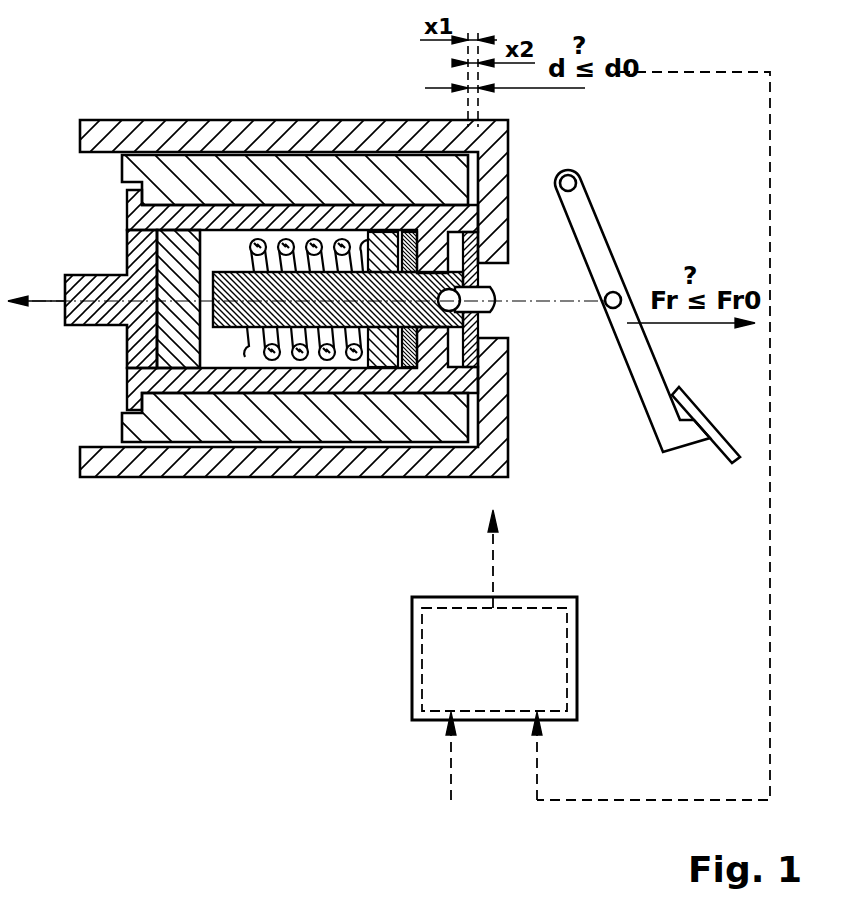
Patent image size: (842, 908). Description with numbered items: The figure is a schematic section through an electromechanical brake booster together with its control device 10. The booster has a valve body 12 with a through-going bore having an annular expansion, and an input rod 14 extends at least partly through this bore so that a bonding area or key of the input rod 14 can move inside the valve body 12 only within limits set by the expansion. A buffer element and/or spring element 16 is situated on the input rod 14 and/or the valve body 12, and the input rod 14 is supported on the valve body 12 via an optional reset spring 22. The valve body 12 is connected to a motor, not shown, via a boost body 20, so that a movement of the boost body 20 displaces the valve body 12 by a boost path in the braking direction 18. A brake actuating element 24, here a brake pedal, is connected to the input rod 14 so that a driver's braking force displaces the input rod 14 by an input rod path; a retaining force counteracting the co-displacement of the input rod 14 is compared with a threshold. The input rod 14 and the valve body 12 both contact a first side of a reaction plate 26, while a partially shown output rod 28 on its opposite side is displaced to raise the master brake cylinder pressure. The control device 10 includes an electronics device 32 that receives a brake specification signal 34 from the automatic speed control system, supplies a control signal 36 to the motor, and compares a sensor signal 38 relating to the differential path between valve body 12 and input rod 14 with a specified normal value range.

The control device 10 is at (577, 660).
The valve body 12 is at (467, 378).
The input rod 14 is at (480, 321).
The buffer element and/or spring element 16 is at (407, 367).
The braking direction 18 is at (38, 304).
The boost body 20 is at (232, 422).
The reset spring 22 is at (297, 367).
The brake actuating element 24 is at (588, 227).
The reaction plate 26 is at (177, 358).
The output rod 28 is at (92, 318).
The electronics device 32 is at (568, 630).
The brake specification signal 34 is at (449, 763).
The control signal 36 is at (495, 558).
The sensor signal 38 is at (540, 762).